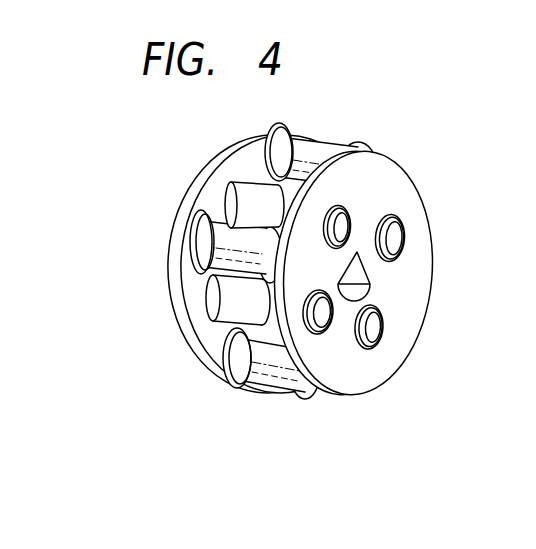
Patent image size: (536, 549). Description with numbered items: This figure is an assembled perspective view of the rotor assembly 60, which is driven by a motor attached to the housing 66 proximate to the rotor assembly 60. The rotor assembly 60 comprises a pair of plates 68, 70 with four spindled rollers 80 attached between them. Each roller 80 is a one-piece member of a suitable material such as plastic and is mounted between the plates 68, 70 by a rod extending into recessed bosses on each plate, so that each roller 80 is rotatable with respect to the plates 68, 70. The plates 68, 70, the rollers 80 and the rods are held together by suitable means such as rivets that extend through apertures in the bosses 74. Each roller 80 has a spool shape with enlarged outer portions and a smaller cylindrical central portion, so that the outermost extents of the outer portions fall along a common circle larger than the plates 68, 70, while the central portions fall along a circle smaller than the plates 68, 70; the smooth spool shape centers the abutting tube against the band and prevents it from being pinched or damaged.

The rotor assembly 60 is at (316, 239).
The housing 66 is at (422, 175).
The plate 68 is at (213, 176).
The plate 70 is at (418, 254).
The bosses 74 is at (285, 205).
The spindled roller 80 is at (303, 150).